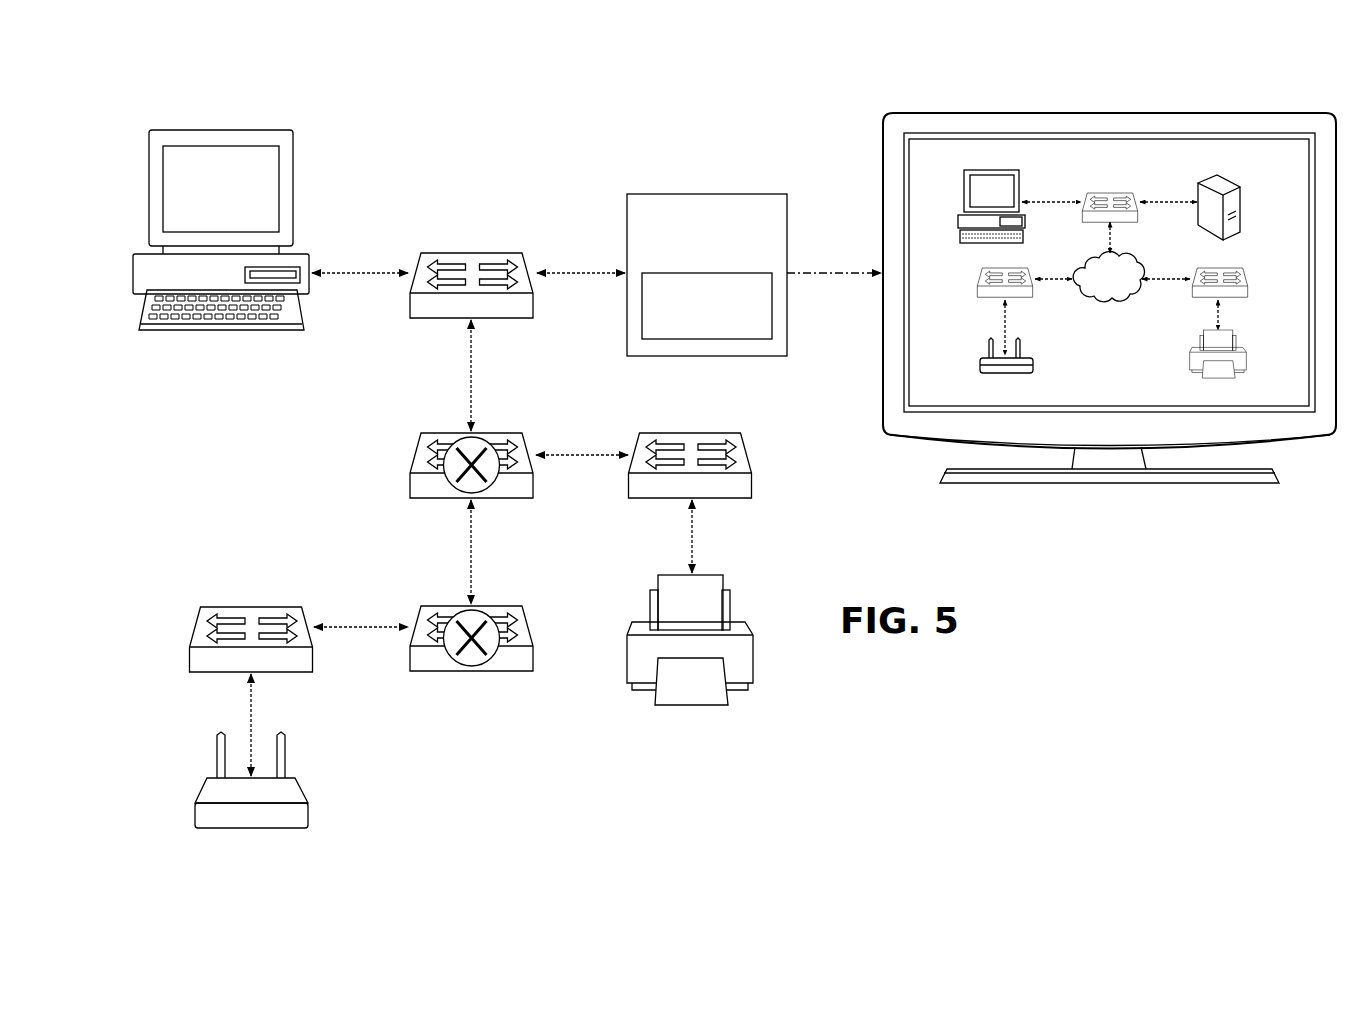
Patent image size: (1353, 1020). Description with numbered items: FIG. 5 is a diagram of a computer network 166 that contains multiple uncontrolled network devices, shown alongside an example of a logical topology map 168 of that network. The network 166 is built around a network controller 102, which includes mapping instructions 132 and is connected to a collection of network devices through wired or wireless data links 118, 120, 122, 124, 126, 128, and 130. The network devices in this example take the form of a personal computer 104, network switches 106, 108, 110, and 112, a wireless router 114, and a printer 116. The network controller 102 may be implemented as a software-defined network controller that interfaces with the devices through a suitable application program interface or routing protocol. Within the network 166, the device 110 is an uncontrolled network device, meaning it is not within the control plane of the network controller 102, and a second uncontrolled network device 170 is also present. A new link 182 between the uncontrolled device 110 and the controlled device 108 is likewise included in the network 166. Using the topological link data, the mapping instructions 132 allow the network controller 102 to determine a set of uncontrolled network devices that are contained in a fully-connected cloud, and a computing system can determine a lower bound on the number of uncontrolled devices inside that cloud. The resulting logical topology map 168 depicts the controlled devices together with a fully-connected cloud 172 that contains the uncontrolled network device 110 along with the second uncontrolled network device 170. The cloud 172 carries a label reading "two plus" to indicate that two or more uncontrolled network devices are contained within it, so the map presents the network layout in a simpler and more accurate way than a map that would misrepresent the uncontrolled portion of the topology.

The network controller 102 is at (708, 193).
The personal computer 104 is at (222, 130).
The network switch 106 is at (472, 252).
The network switch 108 is at (253, 606).
The uncontrolled network device 110 is at (411, 454).
The network switch 112 is at (693, 432).
The wireless router 114 is at (248, 832).
The printer 116 is at (690, 707).
The data link 118 is at (362, 269).
The data link 120 is at (580, 270).
The data link 122 is at (475, 373).
The data link 124 is at (368, 625).
The data link 126 is at (584, 452).
The data link 128 is at (255, 705).
The data link 130 is at (696, 535).
The mapping instructions 132 is at (772, 305).
The network 166 is at (588, 140).
The logical topology map 168 is at (928, 210).
The second uncontrolled network device 170 is at (470, 675).
The fully-connected cloud 172 is at (1108, 306).
The new link 182 is at (475, 548).